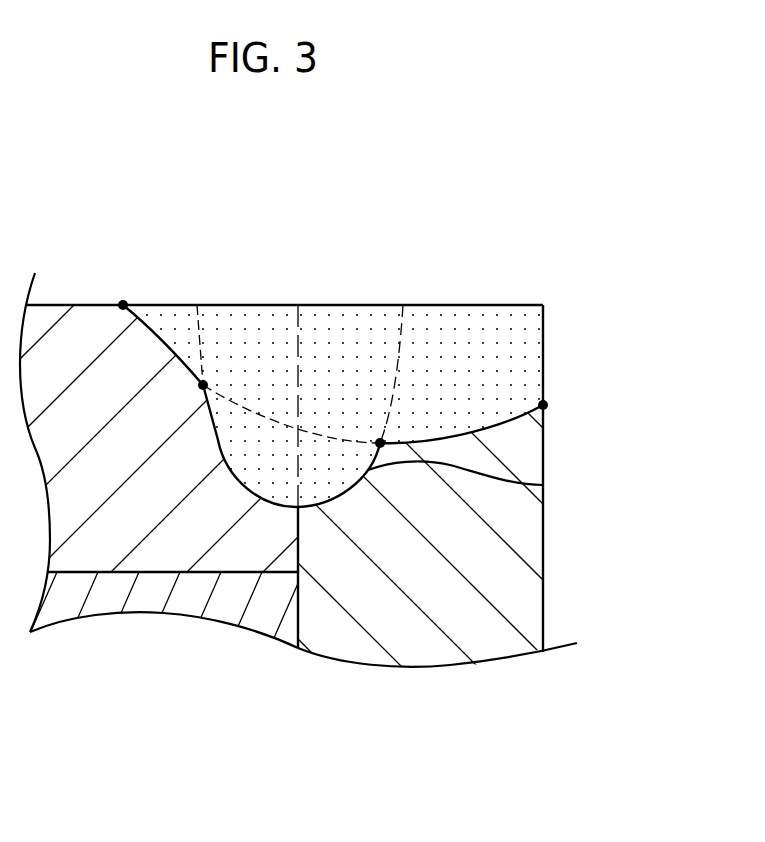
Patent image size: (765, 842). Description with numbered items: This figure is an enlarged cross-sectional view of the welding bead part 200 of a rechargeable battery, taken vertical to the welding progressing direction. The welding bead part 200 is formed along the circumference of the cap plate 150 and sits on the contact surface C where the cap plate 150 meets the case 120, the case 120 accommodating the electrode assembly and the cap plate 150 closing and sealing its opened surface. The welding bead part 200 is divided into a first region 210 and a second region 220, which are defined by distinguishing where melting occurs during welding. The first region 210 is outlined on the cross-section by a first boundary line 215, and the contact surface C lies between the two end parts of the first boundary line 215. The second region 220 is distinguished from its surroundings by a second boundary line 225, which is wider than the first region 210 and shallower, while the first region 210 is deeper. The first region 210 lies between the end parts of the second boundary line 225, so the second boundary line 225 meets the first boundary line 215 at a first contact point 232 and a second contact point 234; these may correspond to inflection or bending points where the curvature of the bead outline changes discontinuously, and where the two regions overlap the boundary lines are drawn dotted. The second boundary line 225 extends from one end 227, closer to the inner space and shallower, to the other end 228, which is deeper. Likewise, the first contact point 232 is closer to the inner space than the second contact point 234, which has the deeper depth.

The cap plate 150 is at (73, 335).
The case 120 is at (520, 535).
The welding bead part 200 is at (490, 280).
The second region 220 is at (510, 332).
The one end 227 is at (123, 303).
The first contact point 232 is at (203, 385).
The first region 210 is at (257, 447).
The second contact point 234 is at (380, 443).
The second boundary line 225 is at (503, 422).
The other end 228 is at (543, 405).
The first boundary line 215 is at (543, 485).
The contact surface C is at (298, 542).